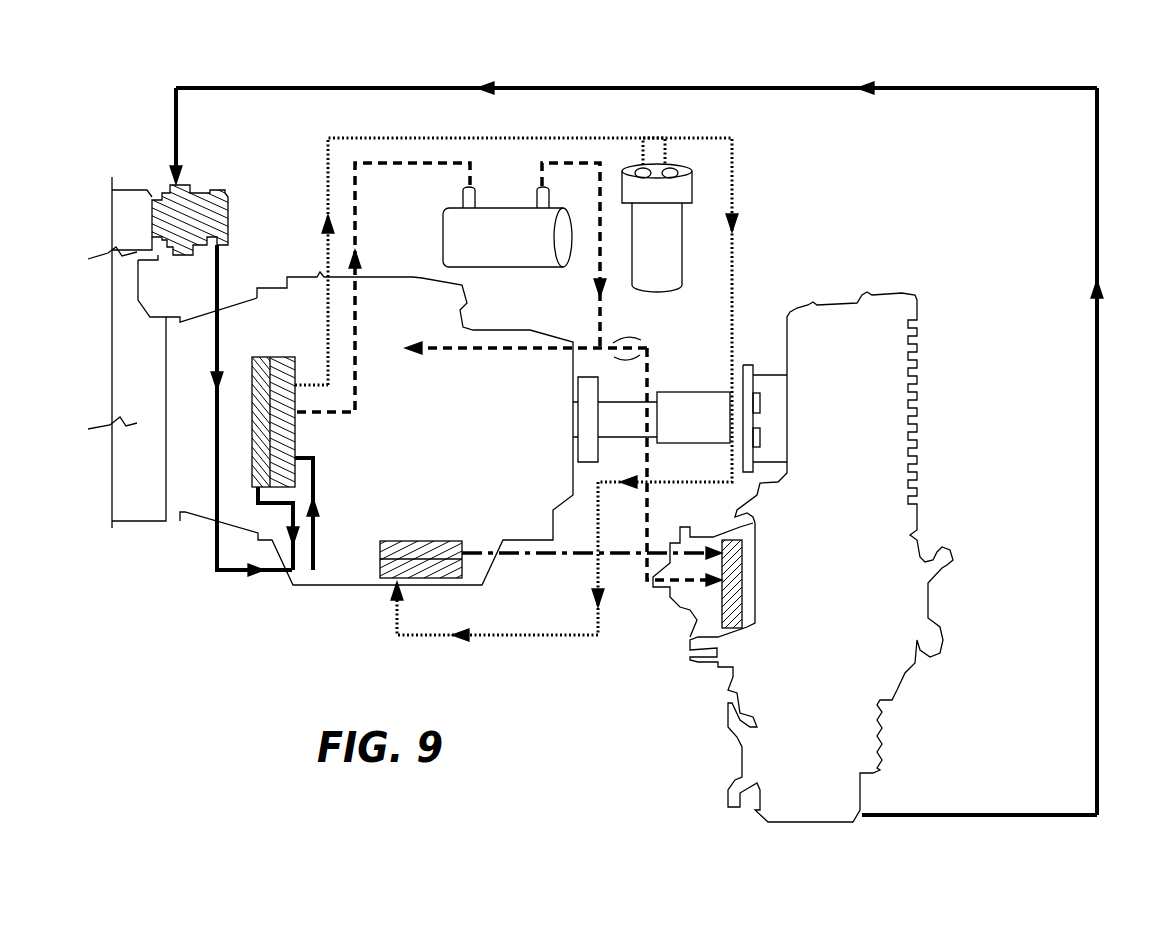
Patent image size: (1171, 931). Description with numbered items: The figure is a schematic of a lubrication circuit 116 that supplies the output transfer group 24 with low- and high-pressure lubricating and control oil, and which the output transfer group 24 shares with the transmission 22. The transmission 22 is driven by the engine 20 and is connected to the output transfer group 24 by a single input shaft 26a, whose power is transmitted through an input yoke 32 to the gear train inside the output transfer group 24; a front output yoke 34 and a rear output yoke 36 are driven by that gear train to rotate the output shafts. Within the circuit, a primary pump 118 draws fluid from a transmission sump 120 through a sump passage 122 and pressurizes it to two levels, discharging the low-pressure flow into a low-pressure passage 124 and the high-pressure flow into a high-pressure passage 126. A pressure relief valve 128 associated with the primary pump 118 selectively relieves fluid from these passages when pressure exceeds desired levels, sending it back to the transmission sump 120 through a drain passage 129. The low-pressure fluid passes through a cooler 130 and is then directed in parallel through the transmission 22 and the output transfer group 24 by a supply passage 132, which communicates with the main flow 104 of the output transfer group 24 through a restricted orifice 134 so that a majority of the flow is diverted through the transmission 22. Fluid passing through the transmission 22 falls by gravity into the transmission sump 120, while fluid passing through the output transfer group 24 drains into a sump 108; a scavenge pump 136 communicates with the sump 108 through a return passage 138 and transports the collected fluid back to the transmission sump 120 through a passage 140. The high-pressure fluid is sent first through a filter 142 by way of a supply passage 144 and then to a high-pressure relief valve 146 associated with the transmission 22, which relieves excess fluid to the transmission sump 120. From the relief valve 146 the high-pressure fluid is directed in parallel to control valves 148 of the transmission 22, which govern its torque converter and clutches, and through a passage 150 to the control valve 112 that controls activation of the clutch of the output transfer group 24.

The lubrication circuit 116 is at (1043, 58).
The return passage 138 is at (1097, 197).
The sump 108 is at (862, 815).
The scavenge pump 136 is at (192, 218).
The engine 20 is at (147, 396).
The high-pressure passage 126 is at (328, 167).
The low-pressure passage 124 is at (383, 287).
The supply passage 144 is at (413, 136).
The cooler 130 is at (512, 248).
The filter 142 is at (671, 257).
The supply passage 132 is at (593, 262).
The restricted orifice 134 is at (627, 340).
The pressure relief valve 128 is at (252, 403).
The primary pump 118 is at (285, 428).
The drain passage 129 is at (258, 495).
The sump passage 122 is at (313, 493).
The transmission sump 120 is at (303, 578).
The passage 140 is at (217, 563).
The control valves 148 is at (405, 552).
The high-pressure relief valve 146 is at (353, 578).
The passage 150 is at (523, 557).
The transmission 22 is at (435, 424).
The input shaft 26a is at (704, 426).
The input yoke 32 is at (742, 475).
The output transfer group 24 is at (837, 584).
The rear output yoke 36 is at (950, 560).
The front output yoke 34 is at (728, 796).
The main flow 104 is at (690, 600).
The control valve 112 is at (733, 563).